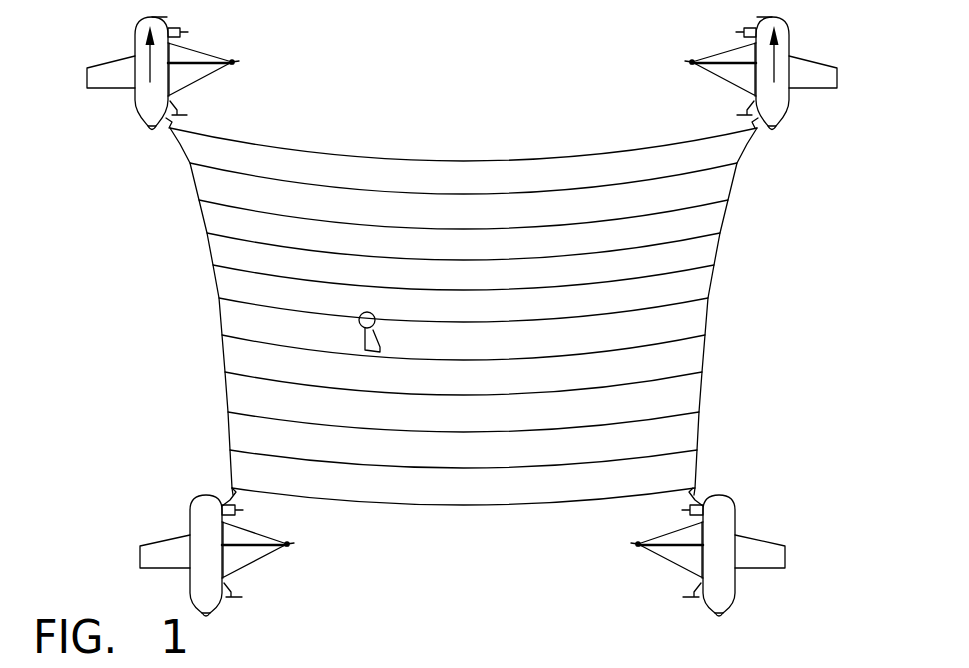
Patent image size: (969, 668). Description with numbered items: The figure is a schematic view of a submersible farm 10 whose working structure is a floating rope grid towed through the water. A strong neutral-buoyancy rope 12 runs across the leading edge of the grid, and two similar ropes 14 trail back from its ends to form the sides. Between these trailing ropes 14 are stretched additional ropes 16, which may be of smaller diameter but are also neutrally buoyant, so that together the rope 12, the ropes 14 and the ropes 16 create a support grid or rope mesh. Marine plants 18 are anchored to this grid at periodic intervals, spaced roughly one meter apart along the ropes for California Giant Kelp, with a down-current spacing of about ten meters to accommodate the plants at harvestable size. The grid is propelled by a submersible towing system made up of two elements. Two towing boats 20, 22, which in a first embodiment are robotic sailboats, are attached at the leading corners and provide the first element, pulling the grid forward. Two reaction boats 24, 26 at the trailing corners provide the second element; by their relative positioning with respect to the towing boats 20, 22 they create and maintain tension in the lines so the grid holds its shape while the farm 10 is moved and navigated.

The farm 10 is at (780, 205).
The neutral-buoyancy rope 12 is at (350, 155).
The trailing ropes 14 is at (207, 243).
The cross ropes 16 is at (288, 284).
The marine plants 18 is at (359, 324).
The towing boat 20 is at (160, 78).
The towing boat 22 is at (770, 97).
The reaction boat 24 is at (200, 505).
The reaction boat 26 is at (720, 522).